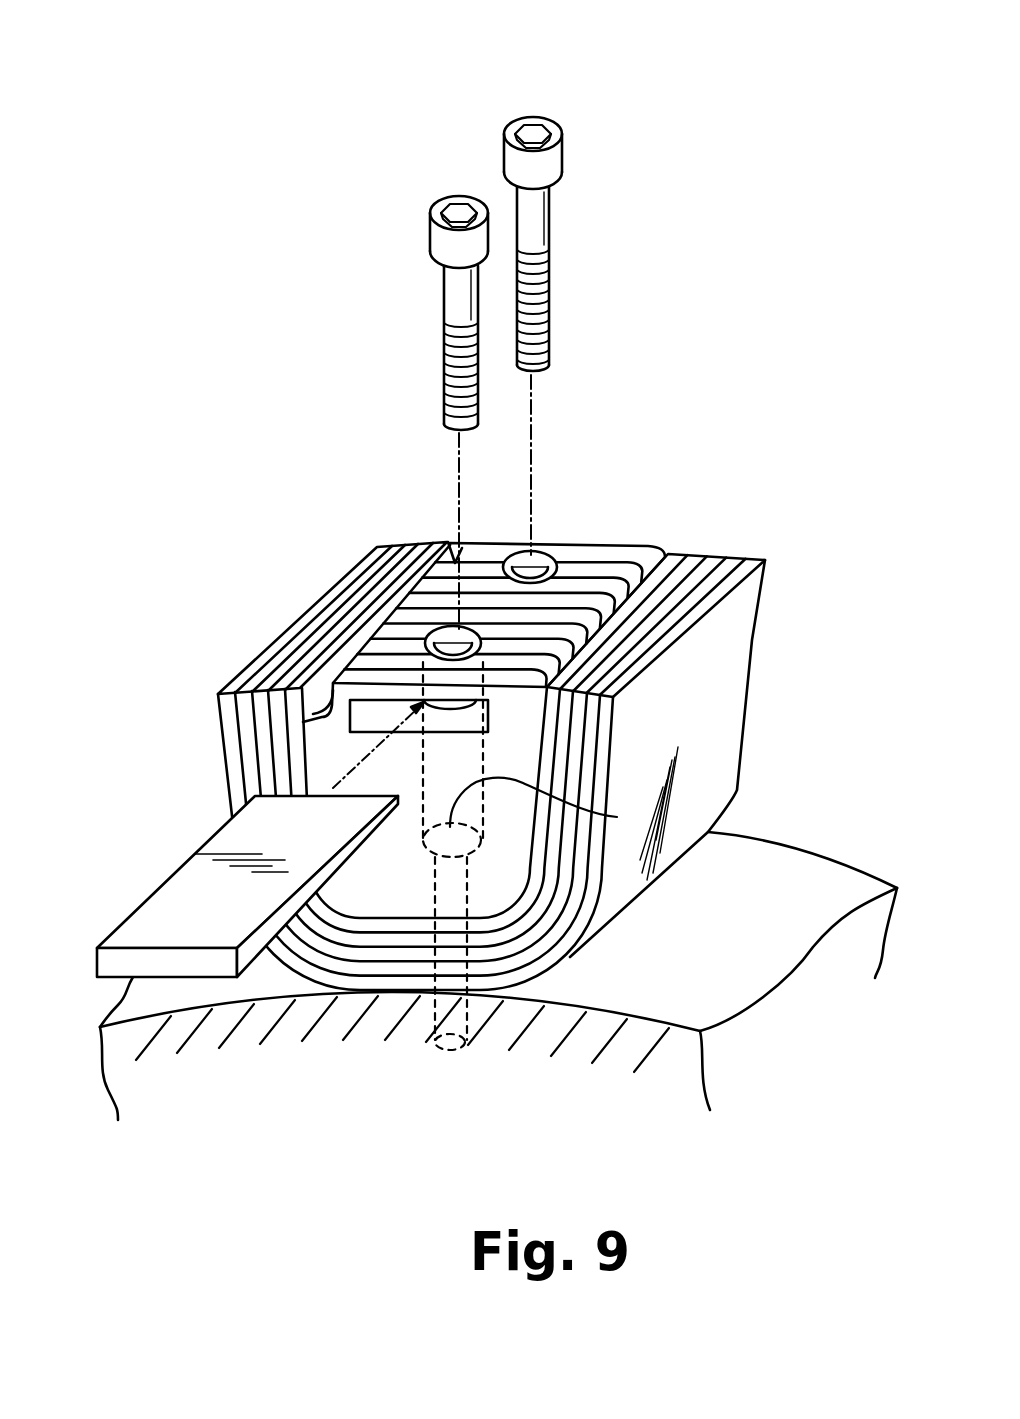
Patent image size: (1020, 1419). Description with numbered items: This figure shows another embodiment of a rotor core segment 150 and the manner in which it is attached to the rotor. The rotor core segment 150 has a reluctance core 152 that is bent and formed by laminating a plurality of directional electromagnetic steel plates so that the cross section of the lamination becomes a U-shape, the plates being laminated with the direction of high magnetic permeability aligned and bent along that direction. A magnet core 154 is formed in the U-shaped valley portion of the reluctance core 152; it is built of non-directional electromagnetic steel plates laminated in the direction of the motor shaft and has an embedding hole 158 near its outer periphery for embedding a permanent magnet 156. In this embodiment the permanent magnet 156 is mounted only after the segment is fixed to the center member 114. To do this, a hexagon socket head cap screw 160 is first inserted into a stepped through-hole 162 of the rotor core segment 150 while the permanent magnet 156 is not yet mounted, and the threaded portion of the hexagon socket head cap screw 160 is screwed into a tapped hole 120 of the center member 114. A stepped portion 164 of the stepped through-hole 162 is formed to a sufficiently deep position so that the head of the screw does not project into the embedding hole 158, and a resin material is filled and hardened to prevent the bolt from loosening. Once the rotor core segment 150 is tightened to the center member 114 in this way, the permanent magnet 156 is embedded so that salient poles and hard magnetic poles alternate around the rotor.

The center member 114 is at (770, 935).
The tapped hole 120 is at (435, 1028).
The rotor core segment 150 is at (248, 295).
The reluctance core 152 is at (740, 682).
The magnet core 154 is at (570, 543).
The permanent magnet 156 is at (183, 870).
The embedding hole 158 is at (387, 705).
The hexagon socket head cap screw 160 is at (438, 200).
The stepped through-hole 162 is at (432, 632).
The stepped portion 164 is at (617, 817).